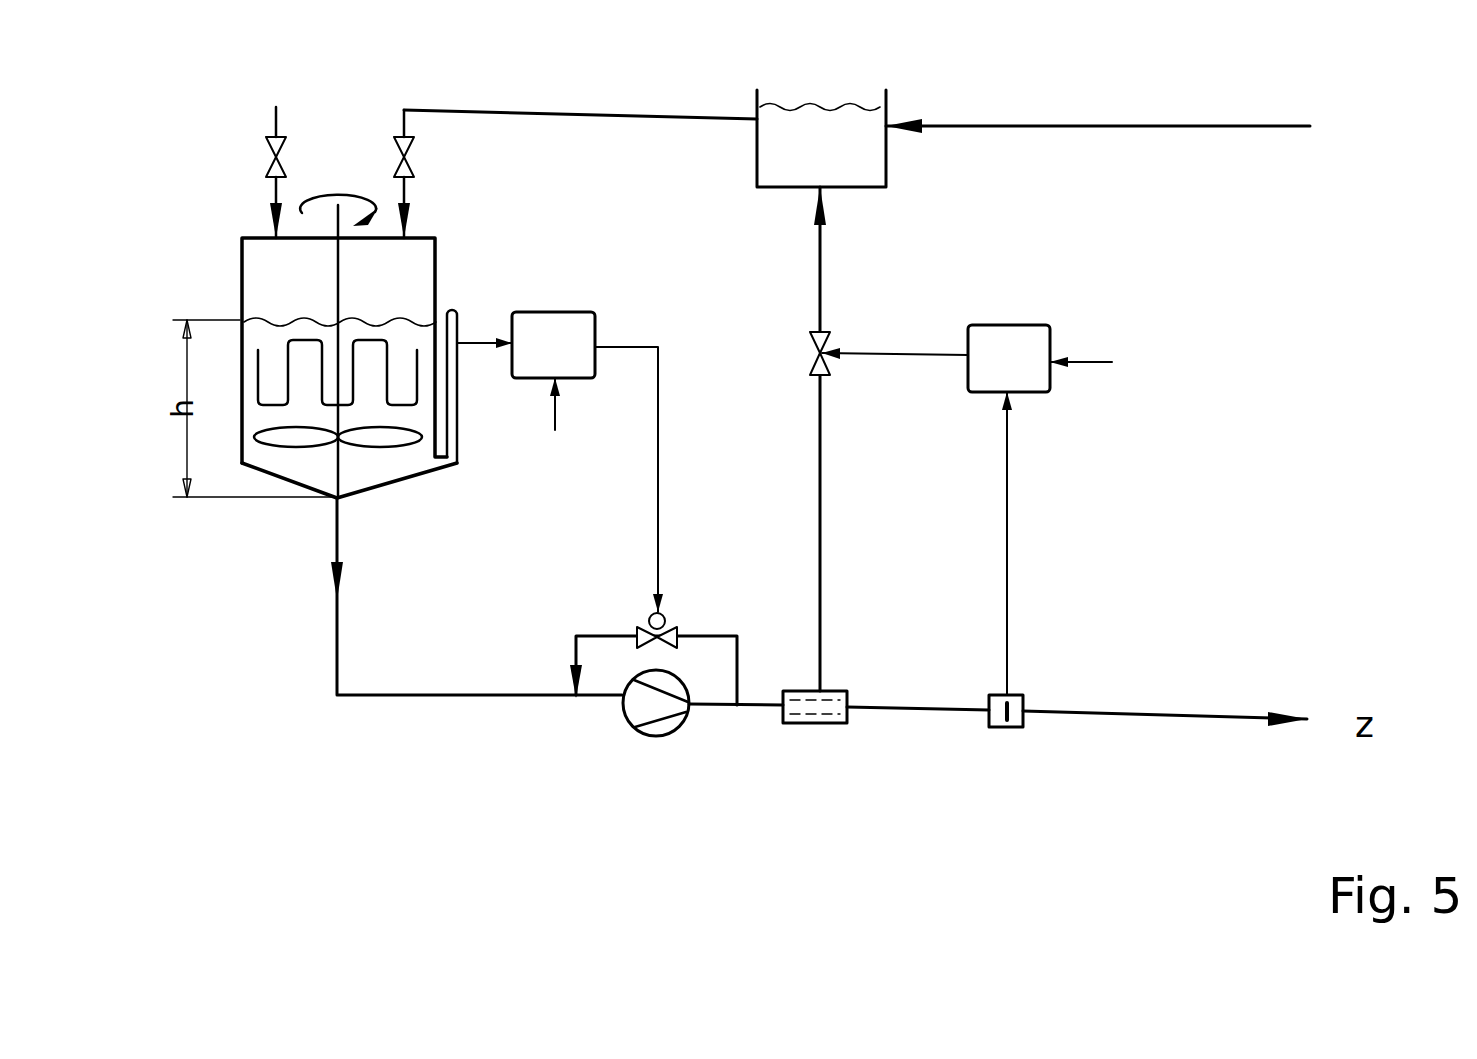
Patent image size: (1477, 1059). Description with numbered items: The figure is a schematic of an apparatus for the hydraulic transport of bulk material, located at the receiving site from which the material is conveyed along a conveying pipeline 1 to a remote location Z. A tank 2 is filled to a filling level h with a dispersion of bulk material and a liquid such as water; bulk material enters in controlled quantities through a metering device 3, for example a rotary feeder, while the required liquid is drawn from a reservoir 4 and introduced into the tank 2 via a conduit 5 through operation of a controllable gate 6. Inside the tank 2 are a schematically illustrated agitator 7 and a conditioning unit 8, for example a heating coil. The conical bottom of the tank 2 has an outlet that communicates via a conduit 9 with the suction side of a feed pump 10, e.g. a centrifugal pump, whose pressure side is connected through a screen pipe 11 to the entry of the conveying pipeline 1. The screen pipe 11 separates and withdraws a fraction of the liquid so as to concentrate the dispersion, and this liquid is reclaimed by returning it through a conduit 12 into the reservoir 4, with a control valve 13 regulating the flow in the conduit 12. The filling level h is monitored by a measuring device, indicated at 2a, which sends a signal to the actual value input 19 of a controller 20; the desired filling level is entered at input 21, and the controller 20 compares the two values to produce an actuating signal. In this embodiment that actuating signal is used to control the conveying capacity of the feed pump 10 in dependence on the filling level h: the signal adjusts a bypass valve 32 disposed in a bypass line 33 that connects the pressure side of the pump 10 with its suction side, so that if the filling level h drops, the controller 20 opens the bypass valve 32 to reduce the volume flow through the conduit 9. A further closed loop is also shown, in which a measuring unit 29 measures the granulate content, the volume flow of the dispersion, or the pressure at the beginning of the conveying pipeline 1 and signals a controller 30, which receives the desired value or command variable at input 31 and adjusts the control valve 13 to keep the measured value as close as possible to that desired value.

The conveying pipeline 1 is at (1170, 718).
The tank 2 is at (240, 268).
The measuring device for filling level 2a is at (450, 310).
The metering device 3 is at (262, 168).
The reservoir 4 is at (886, 173).
The conduit 5 is at (688, 120).
The controllable gate 6 is at (412, 175).
The agitator 7 is at (265, 437).
The conditioning unit 8 is at (258, 350).
The conduit 9 is at (330, 659).
The feed pump 10 is at (652, 736).
The screen pipe 11 is at (820, 727).
The conduit 12 is at (822, 522).
The control valve 13 is at (810, 368).
The actual value input 19 is at (478, 356).
The controller 20 is at (583, 312).
The input for desired value 21 is at (555, 430).
The measuring unit 29 is at (1007, 727).
The controller 30 is at (1037, 392).
The input 31 is at (1112, 362).
The bypass valve 32 is at (643, 629).
The bypass line 33 is at (727, 636).